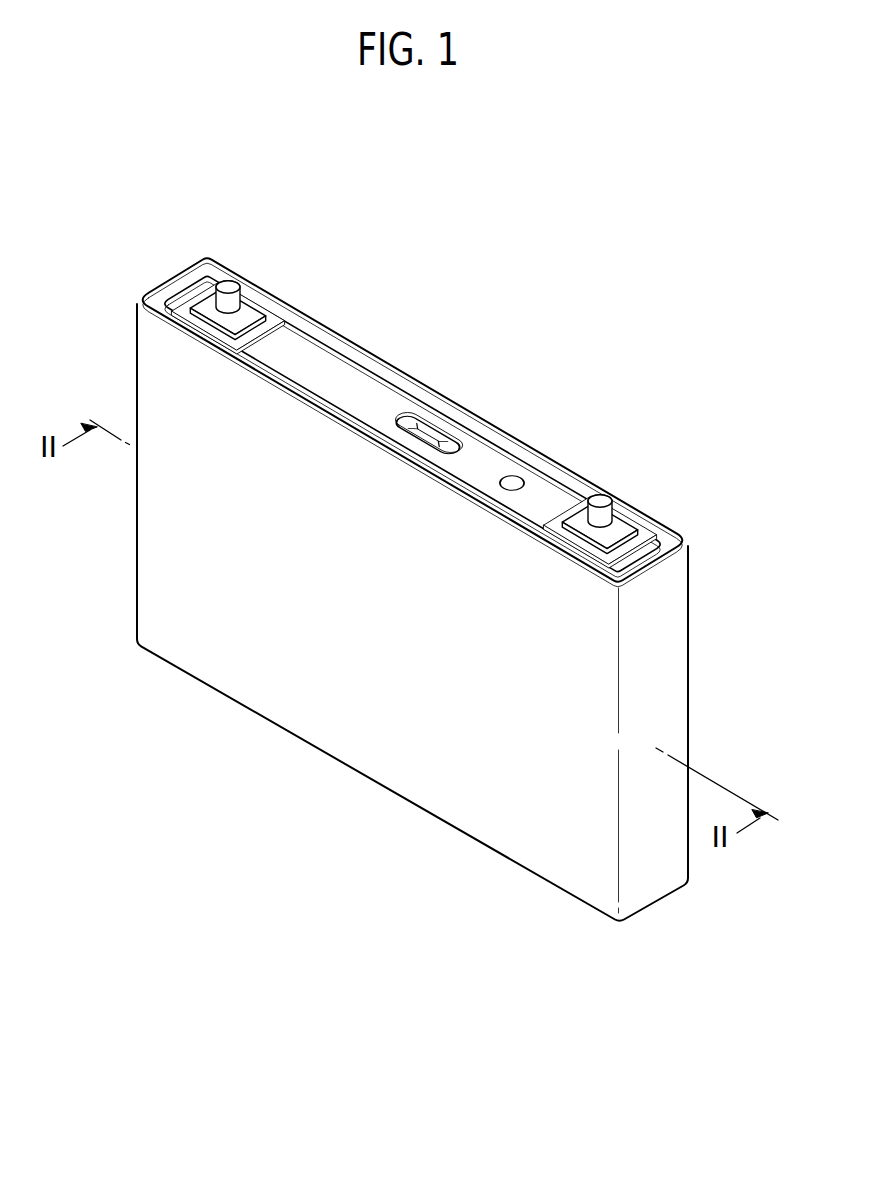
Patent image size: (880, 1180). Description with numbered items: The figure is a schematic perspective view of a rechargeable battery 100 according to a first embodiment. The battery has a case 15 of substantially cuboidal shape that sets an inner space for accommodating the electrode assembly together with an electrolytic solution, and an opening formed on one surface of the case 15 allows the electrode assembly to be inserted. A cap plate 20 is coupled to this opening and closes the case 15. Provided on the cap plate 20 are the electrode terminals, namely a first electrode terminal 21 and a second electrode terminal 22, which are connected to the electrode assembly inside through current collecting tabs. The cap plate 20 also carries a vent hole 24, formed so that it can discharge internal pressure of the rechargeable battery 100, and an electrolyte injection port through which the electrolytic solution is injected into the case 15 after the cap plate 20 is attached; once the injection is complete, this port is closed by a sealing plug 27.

The rechargeable battery 100 is at (443, 569).
The case 15 is at (668, 675).
The cap plate 20 is at (331, 355).
The first electrode terminal 21 is at (250, 298).
The second electrode terminal 22 is at (622, 512).
The vent hole 24 is at (412, 416).
The sealing plug 27 is at (511, 477).